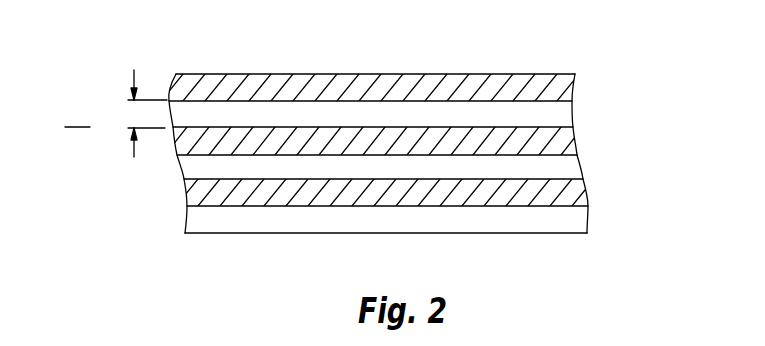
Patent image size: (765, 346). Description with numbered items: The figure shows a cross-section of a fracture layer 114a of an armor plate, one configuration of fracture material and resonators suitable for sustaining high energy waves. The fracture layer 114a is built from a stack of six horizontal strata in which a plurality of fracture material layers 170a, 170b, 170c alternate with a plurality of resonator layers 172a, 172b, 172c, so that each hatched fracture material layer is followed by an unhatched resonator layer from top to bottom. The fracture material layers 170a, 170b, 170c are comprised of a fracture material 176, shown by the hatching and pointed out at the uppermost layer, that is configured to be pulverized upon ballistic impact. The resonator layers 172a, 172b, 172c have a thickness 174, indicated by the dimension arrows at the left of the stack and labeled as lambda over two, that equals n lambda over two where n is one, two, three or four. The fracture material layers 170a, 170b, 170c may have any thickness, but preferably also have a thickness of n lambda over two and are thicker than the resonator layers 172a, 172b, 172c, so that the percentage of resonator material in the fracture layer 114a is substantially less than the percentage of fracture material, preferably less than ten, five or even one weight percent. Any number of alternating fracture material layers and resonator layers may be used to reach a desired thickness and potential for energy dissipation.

The fracture layer 114a is at (485, 61).
The fracture material layer 170a is at (575, 84).
The fracture material layer 170b is at (573, 143).
The fracture material layer 170c is at (584, 196).
The resonator layer 172a is at (572, 113).
The resonator layer 172b is at (578, 168).
The resonator layer 172c is at (587, 226).
The thickness 174 is at (130, 72).
The fracture material 176 is at (268, 80).